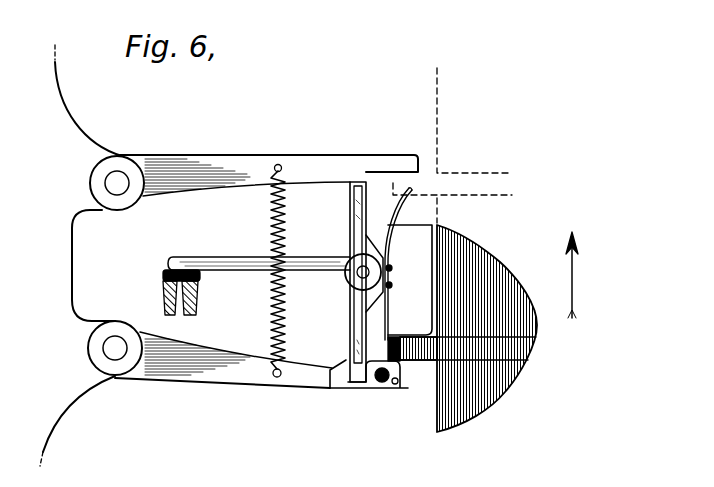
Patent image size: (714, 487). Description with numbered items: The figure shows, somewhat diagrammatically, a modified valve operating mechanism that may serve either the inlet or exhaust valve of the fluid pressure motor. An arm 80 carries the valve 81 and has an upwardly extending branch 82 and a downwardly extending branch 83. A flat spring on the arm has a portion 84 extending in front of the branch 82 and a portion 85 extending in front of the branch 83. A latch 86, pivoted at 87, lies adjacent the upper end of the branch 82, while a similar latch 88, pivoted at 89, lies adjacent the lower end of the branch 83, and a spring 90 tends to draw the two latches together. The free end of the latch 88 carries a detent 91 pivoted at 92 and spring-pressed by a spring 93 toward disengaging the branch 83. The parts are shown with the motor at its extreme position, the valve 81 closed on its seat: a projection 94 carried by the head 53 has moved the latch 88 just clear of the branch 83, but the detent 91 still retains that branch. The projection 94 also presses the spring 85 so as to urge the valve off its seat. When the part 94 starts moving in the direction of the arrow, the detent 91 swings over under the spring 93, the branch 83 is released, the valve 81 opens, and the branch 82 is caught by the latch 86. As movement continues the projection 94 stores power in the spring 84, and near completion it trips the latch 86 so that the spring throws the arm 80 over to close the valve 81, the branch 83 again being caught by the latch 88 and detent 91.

The head 53 is at (469, 328).
The arm 80 is at (229, 262).
The valve 81 is at (163, 272).
The upwardly extending branch 82 is at (357, 210).
The downwardly extending branch 83 is at (353, 330).
The spring portion 84 is at (398, 218).
The spring portion 85 is at (395, 312).
The latch 86 is at (269, 165).
The pivot 87 is at (108, 182).
The latch 88 is at (220, 378).
The pivot 89 is at (110, 350).
The spring 90 is at (270, 298).
The detent 91 is at (343, 384).
The pivot 92 is at (392, 385).
The spring 93 is at (375, 384).
The projection 94 is at (420, 364).